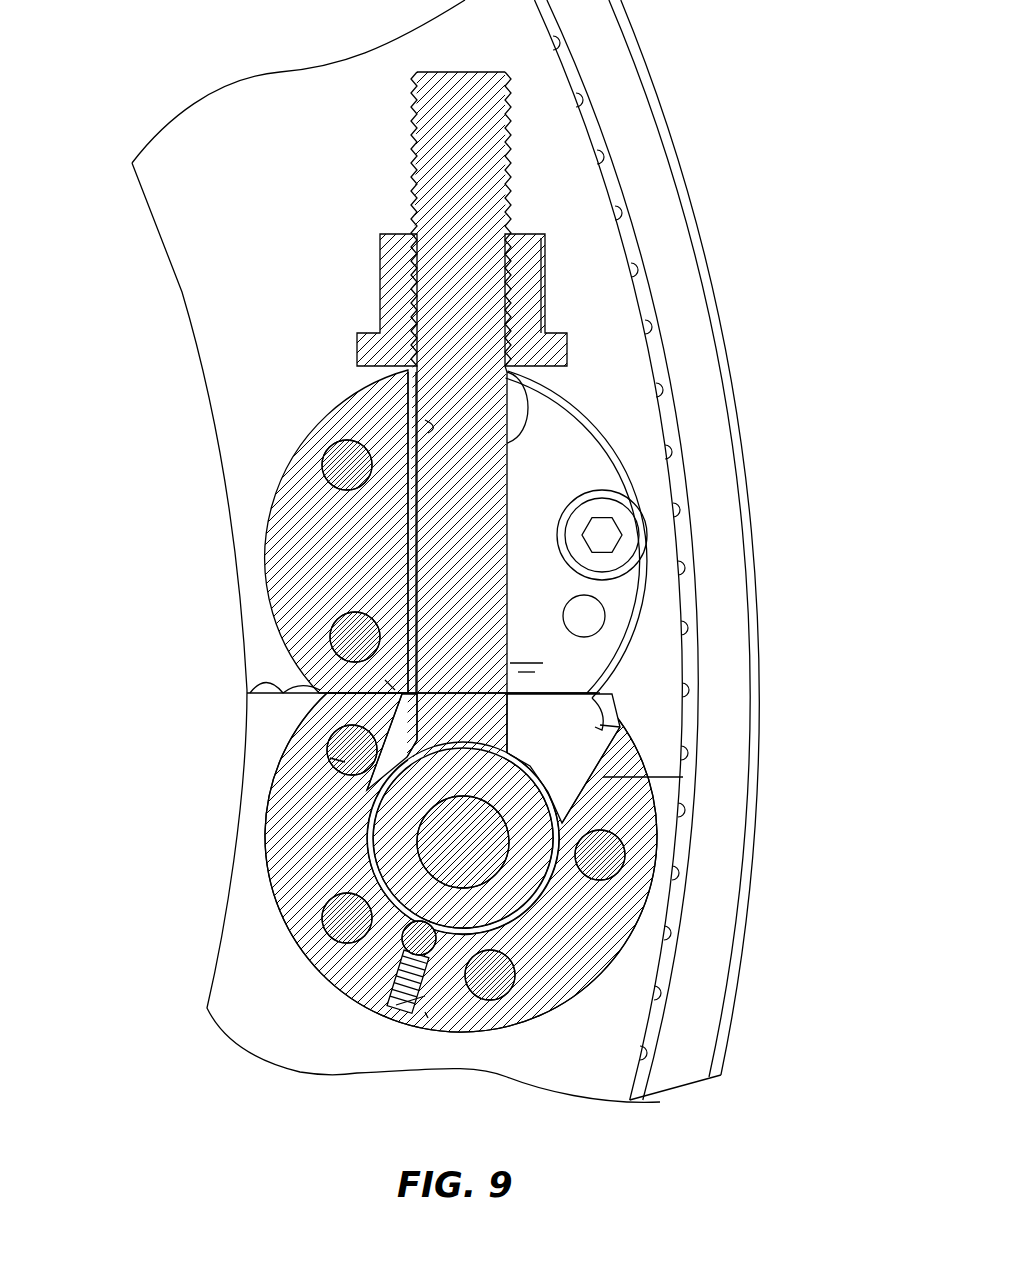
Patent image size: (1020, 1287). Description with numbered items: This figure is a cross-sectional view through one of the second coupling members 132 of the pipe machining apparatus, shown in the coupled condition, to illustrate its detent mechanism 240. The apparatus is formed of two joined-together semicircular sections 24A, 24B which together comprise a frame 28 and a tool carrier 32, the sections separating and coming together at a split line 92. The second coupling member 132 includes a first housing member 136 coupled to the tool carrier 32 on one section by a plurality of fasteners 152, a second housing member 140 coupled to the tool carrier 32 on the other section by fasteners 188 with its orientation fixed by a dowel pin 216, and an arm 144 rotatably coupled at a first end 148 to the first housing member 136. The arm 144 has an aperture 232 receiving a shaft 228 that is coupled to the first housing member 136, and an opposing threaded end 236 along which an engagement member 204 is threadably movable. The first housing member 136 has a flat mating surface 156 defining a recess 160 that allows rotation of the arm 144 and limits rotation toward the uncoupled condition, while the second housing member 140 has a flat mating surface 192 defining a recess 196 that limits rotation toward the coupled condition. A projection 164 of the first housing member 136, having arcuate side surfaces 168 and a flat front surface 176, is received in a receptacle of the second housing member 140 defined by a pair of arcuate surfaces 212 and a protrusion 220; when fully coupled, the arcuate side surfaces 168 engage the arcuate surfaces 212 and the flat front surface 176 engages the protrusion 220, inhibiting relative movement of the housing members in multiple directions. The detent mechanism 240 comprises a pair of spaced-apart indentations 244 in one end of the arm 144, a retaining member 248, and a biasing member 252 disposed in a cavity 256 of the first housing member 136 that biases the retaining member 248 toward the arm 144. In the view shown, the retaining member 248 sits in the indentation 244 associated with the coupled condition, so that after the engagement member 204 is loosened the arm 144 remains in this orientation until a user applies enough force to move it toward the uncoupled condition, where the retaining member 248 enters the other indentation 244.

The frame 28 is at (658, 96).
The tool carrier 32 is at (270, 175).
The first semicircular section 24A is at (155, 291).
The second semicircular section 24B is at (742, 1061).
The threaded end 236 is at (442, 143).
The engagement member 204 is at (545, 312).
The second coupling member 132 is at (562, 265).
The recess 196 is at (428, 427).
The fasteners 188 is at (340, 462).
The arm 144 is at (402, 547).
The second housing member 140 is at (585, 450).
The dowel pin 216 is at (592, 612).
The protrusion 220 is at (392, 684).
The mating surface 192 is at (395, 690).
The split line 92 is at (258, 682).
The mating surface 156 is at (340, 760).
The fasteners 152 is at (350, 750).
The aperture 232 is at (455, 843).
The shaft 228 is at (455, 872).
The indentations 244 is at (410, 938).
The cavity 256 is at (392, 975).
The biasing member 252 is at (400, 1010).
The detent mechanism 240 is at (425, 1015).
The retaining member 248 is at (460, 1010).
The first housing member 136 is at (560, 975).
The projection 164 is at (530, 655).
The arcuate surfaces 212 is at (523, 680).
The arcuate side surfaces 168 is at (600, 693).
The flat front surface 176 is at (605, 727).
The first end 148 is at (560, 772).
The recess 160 is at (590, 800).